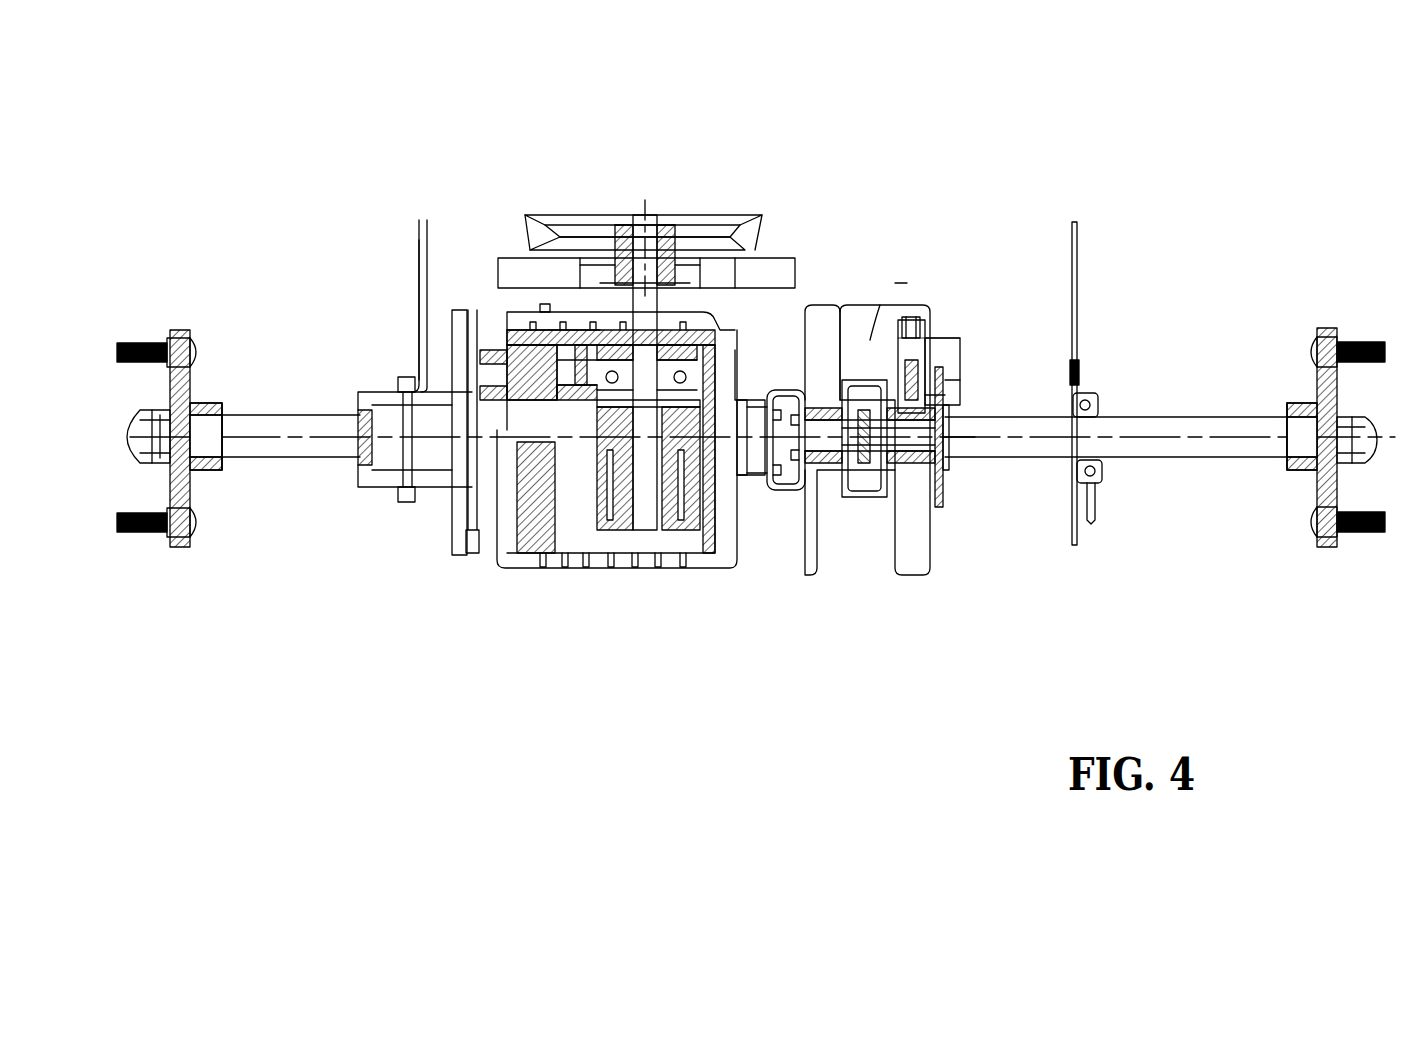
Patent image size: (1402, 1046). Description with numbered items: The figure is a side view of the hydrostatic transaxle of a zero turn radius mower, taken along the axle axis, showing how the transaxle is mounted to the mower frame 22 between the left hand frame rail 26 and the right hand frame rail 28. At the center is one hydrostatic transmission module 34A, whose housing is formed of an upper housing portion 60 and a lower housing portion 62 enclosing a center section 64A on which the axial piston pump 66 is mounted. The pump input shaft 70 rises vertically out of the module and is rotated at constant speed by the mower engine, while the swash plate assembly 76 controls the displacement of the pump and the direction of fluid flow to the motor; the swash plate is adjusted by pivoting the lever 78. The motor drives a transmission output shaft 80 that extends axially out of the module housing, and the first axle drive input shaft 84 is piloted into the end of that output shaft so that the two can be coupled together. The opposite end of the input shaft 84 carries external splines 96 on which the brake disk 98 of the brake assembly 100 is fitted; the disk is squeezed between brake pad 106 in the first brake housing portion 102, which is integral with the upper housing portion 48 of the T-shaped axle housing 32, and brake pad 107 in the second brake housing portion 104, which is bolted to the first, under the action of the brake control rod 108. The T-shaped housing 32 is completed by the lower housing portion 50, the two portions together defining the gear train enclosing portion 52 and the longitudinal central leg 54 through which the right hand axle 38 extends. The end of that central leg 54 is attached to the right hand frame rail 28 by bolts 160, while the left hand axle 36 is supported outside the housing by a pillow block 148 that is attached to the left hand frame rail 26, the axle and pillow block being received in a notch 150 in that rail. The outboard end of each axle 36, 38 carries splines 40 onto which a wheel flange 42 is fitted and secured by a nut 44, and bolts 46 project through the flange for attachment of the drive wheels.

The frame 22 is at (419, 232).
The left hand frame rail 26 is at (1078, 272).
The right hand frame rail 28 is at (419, 290).
The T-shaped axle housing 32 is at (880, 305).
The hydrostatic transmission module 34A is at (507, 325).
The left hand axle 36 is at (1190, 450).
The right hand axle 38 is at (290, 452).
The splines 40 is at (205, 410).
The flange 42 is at (190, 385).
The nut 44 is at (745, 452).
The bolts 46 is at (175, 352).
The upper housing portion 48 is at (905, 283).
The lower housing portion 50 is at (860, 565).
The gear train enclosing portion 52 is at (849, 278).
The longitudinal central leg 54 is at (437, 492).
The upper housing portion 60 is at (695, 335).
The lower housing portion 62 is at (718, 556).
The center section 64A is at (570, 510).
The axial piston pump 66 is at (578, 452).
The input shaft 70 is at (685, 270).
The swash plate assembly 76 is at (740, 385).
The lever 78 is at (473, 555).
The transmission output shaft 80 is at (770, 490).
The first axle drive input shaft 84 is at (828, 560).
The external splines 96 is at (952, 432).
The brake disk 98 is at (950, 480).
The brake assembly 100 is at (968, 325).
The first brake housing portion 102 is at (933, 345).
The second brake housing portion 104 is at (960, 355).
The brake pad 106 is at (945, 382).
The brake pad 107 is at (940, 397).
The brake control rod 108 is at (920, 320).
The pillow block 148 is at (1093, 510).
The notch 150 is at (1085, 378).
The bolts 160 is at (400, 378).